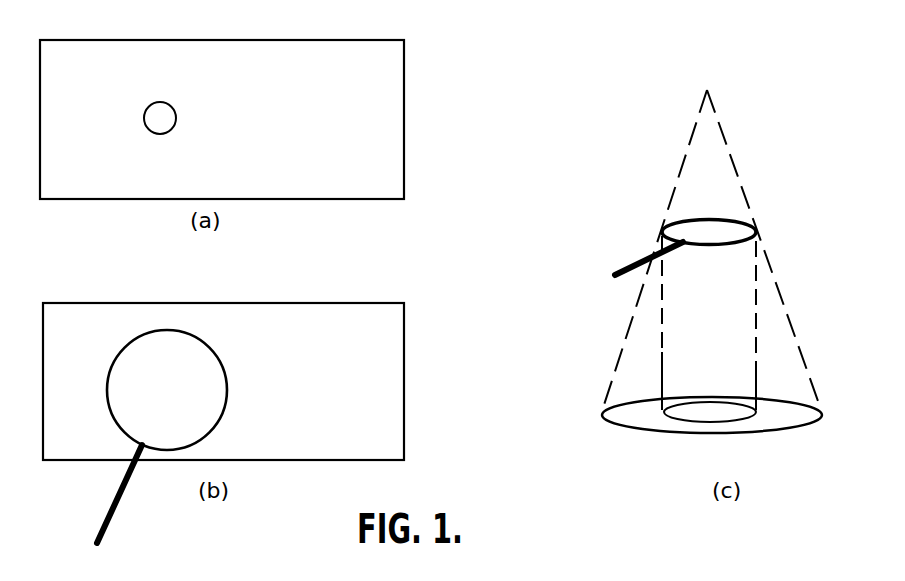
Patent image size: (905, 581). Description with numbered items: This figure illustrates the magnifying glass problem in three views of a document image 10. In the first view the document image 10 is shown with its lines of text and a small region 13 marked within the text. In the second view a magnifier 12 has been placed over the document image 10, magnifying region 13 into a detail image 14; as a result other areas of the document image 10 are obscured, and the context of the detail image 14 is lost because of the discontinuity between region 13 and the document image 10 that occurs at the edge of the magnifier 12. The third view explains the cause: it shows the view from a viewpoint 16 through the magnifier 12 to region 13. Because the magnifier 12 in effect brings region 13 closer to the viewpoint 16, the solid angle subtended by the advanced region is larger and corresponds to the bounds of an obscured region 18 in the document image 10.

The document image 10 is at (404, 93).
The magnifier 12 is at (120, 505).
The region 13 is at (162, 107).
The detail image 14 is at (145, 347).
The viewpoint 16 is at (709, 89).
The obscured region 18 is at (602, 409).